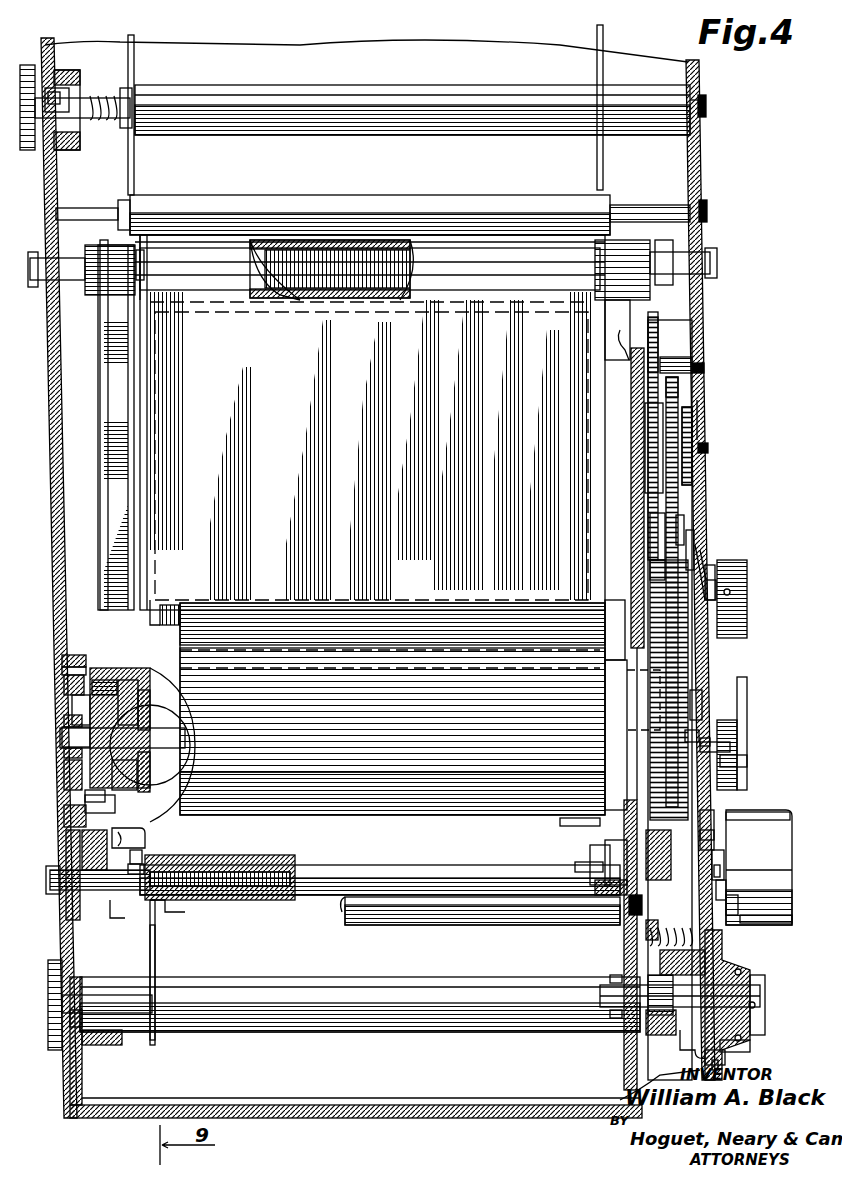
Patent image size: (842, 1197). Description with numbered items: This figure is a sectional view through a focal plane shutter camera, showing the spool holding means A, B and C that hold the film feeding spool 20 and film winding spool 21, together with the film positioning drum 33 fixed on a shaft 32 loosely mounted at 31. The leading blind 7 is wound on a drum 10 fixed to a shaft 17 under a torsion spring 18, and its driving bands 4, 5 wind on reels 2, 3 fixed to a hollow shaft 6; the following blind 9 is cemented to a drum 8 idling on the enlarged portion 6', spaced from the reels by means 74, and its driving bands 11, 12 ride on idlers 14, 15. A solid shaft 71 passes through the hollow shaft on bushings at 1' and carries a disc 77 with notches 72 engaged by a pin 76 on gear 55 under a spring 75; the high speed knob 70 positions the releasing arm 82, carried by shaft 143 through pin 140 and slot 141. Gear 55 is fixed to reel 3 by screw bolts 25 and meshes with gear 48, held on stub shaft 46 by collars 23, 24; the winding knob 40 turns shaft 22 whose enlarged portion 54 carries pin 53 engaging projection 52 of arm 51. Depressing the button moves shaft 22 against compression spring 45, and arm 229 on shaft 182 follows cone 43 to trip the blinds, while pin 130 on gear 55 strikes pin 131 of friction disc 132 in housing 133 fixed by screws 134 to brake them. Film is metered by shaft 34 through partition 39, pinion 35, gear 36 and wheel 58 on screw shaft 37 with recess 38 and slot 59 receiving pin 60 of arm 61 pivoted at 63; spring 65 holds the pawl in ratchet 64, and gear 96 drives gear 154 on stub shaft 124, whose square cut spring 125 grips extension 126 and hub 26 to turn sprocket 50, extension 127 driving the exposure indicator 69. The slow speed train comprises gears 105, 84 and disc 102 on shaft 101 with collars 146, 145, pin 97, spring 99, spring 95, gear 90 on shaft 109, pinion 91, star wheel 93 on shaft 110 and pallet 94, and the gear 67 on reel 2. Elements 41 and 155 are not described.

The recessed portion of shaft 1' is at (198, 745).
The reel 2 is at (615, 735).
The reel 3 is at (140, 690).
The driving band 4 is at (612, 665).
The driving band 5 is at (165, 610).
The hollow shaft 6 is at (182, 762).
The enlarged portion of shaft 6' is at (172, 710).
The leading blind 7 is at (370, 422).
The drum 8 is at (180, 782).
The following blind 9 is at (392, 709).
The drum 10 is at (147, 240).
The driving band 11 is at (102, 406).
The driving band 12 is at (625, 352).
The idler 14 is at (652, 243).
The idler 15 is at (96, 312).
The shaft 17 is at (90, 262).
The torsion spring 18 is at (365, 258).
The film feeding spool 20 is at (525, 82).
The film winding spool 21 is at (212, 1040).
The shaft 22 is at (430, 870).
The collar 23 is at (156, 945).
The collar 24 is at (90, 862).
The screw bolt 25 is at (88, 698).
The hub 26 is at (600, 998).
The mounting in camera frame 31 is at (702, 206).
The shaft 32 is at (643, 208).
The film positioning drum 33 is at (493, 203).
The film metering shaft 34 is at (398, 930).
The pinion 35 is at (648, 938).
The gear 36 is at (598, 886).
The screw shaft 37 is at (716, 838).
The recess 38 is at (724, 888).
The partition 39 is at (640, 928).
The winding knob 40 is at (792, 900).
The bearing 41 is at (606, 860).
The cone 43 is at (592, 848).
The compression spring 45 is at (245, 872).
The stub shaft 46 is at (172, 904).
The gear 48 is at (95, 838).
The sprocket 50 is at (614, 1018).
The arm 51 is at (129, 839).
The projection 52 is at (142, 866).
The pin 53 is at (145, 876).
The enlarged portion 54 is at (120, 915).
The gear 55 is at (75, 658).
The wheel 58 is at (714, 823).
The slot 59 is at (736, 822).
The pin 60 is at (630, 905).
The arm 61 is at (732, 906).
The pivot 63 is at (770, 920).
The ratchet 64 is at (680, 1045).
The spring 65 is at (660, 965).
The gear 67 is at (710, 690).
The exposure indicator 69 is at (745, 1042).
The high speed knob 70 is at (748, 746).
The shaft 71 is at (180, 740).
The notch 72 is at (155, 698).
The clearance means 74 is at (170, 712).
The spring 75 is at (96, 792).
The pin 76 is at (82, 738).
The disc 77 is at (80, 756).
The releasing arm 82 is at (702, 710).
The gear 84 is at (682, 520).
The gear 90 is at (678, 393).
The pinion 91 is at (672, 358).
The star wheel 93 is at (658, 314).
The pallet 94 is at (690, 432).
The spring 95 is at (698, 412).
The gear 96 is at (722, 856).
The pin 97 is at (744, 586).
The spring 99 is at (702, 560).
The shaft 101 is at (648, 560).
The disc 102 is at (692, 540).
The gear 105 is at (648, 520).
The shaft 109 is at (708, 446).
The shaft 110 is at (702, 368).
The stub shaft 124 is at (745, 985).
The square cut spring 125 is at (652, 1000).
The extended portion 126 is at (658, 1040).
The extension 127 is at (760, 1010).
The pin 130 is at (112, 802).
The pin 131 is at (78, 814).
The friction disc 132 is at (78, 780).
The housing 133 is at (85, 670).
The screw 134 is at (80, 684).
The pin 140 is at (700, 736).
The elongated slot 141 is at (710, 742).
The shaft 143 is at (720, 746).
The collar 145 is at (712, 576).
The collar 146 is at (703, 556).
The gear 154 is at (730, 1062).
The washer 155 is at (80, 722).
The shaft 182 is at (748, 764).
The arm 229 is at (576, 866).
The film spool holding means A is at (122, 1054).
The film spool holding means B is at (89, 157).
The film spool holding means C is at (652, 132).